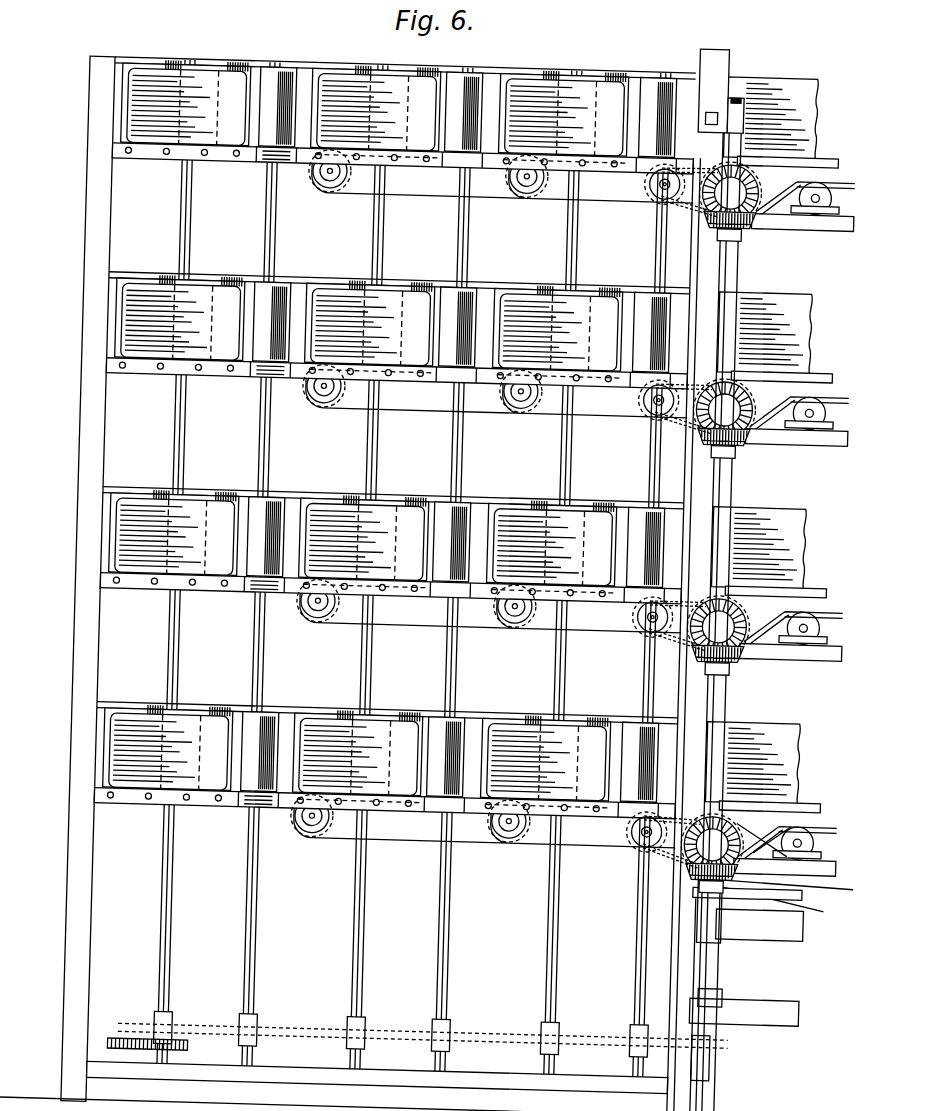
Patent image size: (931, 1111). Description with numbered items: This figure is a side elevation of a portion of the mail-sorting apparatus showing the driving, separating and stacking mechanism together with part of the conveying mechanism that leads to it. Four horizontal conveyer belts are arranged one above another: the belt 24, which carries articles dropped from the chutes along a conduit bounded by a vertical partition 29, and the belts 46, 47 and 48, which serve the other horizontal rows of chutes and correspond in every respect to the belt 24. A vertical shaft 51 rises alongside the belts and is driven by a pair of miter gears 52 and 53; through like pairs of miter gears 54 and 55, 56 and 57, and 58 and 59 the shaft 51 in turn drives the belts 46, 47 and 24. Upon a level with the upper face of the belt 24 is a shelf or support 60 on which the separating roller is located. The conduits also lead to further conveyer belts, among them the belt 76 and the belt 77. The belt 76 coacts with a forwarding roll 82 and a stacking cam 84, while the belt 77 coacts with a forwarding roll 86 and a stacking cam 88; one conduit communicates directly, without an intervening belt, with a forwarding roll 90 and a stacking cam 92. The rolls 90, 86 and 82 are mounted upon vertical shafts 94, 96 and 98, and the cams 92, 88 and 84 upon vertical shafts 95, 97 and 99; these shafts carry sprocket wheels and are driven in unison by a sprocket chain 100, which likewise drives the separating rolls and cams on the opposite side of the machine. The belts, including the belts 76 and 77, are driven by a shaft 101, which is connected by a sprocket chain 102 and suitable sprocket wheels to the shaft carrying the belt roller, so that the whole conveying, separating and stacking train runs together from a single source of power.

The conveyer belt 24 is at (807, 153).
The vertical partition 29 is at (800, 65).
The conveyer belt 46 is at (814, 313).
The conveyer belt 47 is at (821, 588).
The conveyer belt 48 is at (831, 814).
The vertical shaft 51 is at (723, 956).
The miter gear 52 is at (695, 840).
The miter gear 53 is at (698, 869).
The miter gear 54 is at (743, 655).
The miter gear 55 is at (742, 615).
The miter gear 56 is at (742, 442).
The miter gear 57 is at (750, 404).
The miter gear 58 is at (740, 223).
The miter gear 59 is at (741, 185).
The shelf or support 60 is at (278, 164).
The conveyer belt 76 is at (409, 195).
The conveyer belt 77 is at (677, 215).
The forwarding roll 82 is at (254, 84).
The stacking cam 84 is at (199, 70).
The forwarding roll 86 is at (447, 86).
The stacking cam 88 is at (375, 72).
The forwarding roll 90 is at (634, 90).
The stacking cam 92 is at (575, 73).
The vertical shaft 94 is at (645, 265).
The vertical shaft 95 is at (556, 229).
The vertical shaft 96 is at (451, 249).
The vertical shaft 97 is at (360, 239).
The vertical shaft 98 is at (255, 241).
The vertical shaft 99 is at (171, 216).
The sprocket chain 100 is at (502, 1041).
The shaft 101 is at (640, 181).
The sprocket chain 102 is at (696, 212).